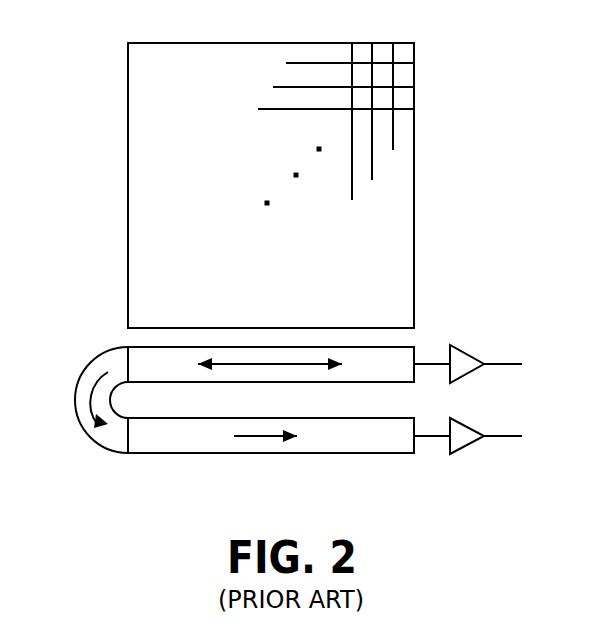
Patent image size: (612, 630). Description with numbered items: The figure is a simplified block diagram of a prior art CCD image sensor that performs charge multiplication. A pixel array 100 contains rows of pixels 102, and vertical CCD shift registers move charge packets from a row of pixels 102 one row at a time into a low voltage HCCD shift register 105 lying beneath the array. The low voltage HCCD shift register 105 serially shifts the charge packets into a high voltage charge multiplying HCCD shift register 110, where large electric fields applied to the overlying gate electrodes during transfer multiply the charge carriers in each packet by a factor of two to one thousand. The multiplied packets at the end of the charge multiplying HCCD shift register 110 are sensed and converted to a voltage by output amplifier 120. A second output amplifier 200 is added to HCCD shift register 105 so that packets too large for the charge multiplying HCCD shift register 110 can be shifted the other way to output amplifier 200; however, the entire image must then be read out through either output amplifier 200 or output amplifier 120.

The pixel array 100 is at (127, 100).
The pixels 102 is at (403, 53).
The low voltage HCCD shift register 105 is at (156, 350).
The charge multiplying HCCD shift register 110 is at (183, 455).
The second output amplifier 200 is at (467, 360).
The output amplifier 120 is at (468, 438).